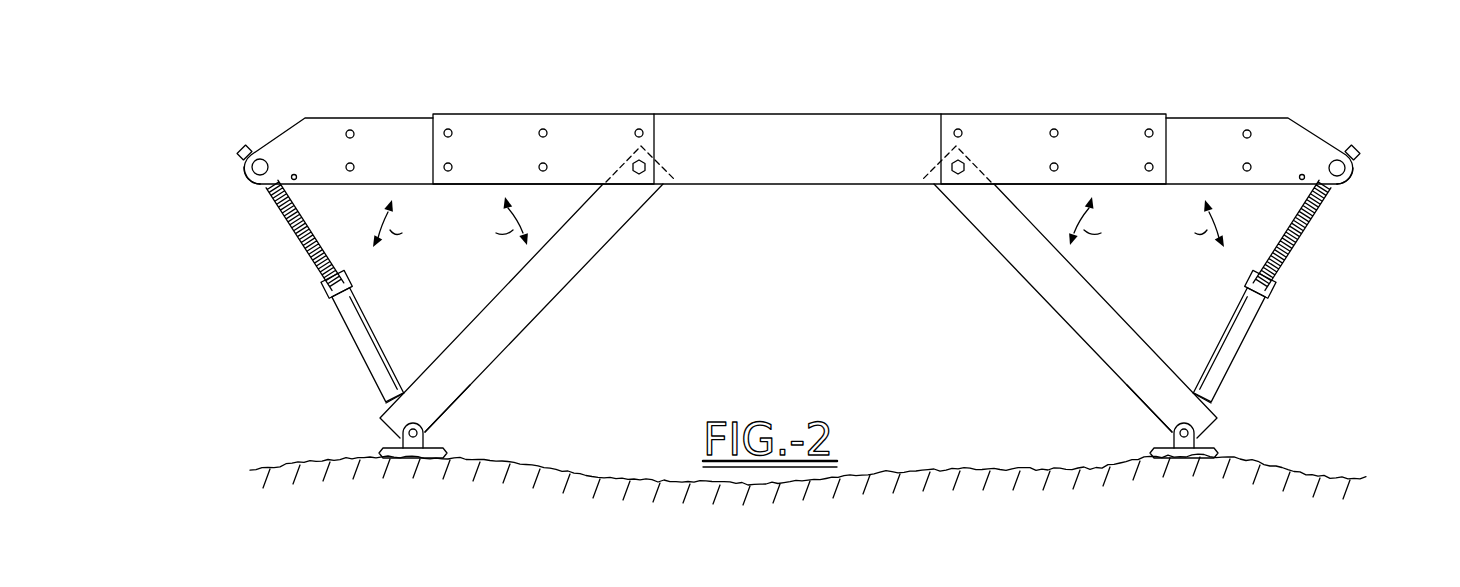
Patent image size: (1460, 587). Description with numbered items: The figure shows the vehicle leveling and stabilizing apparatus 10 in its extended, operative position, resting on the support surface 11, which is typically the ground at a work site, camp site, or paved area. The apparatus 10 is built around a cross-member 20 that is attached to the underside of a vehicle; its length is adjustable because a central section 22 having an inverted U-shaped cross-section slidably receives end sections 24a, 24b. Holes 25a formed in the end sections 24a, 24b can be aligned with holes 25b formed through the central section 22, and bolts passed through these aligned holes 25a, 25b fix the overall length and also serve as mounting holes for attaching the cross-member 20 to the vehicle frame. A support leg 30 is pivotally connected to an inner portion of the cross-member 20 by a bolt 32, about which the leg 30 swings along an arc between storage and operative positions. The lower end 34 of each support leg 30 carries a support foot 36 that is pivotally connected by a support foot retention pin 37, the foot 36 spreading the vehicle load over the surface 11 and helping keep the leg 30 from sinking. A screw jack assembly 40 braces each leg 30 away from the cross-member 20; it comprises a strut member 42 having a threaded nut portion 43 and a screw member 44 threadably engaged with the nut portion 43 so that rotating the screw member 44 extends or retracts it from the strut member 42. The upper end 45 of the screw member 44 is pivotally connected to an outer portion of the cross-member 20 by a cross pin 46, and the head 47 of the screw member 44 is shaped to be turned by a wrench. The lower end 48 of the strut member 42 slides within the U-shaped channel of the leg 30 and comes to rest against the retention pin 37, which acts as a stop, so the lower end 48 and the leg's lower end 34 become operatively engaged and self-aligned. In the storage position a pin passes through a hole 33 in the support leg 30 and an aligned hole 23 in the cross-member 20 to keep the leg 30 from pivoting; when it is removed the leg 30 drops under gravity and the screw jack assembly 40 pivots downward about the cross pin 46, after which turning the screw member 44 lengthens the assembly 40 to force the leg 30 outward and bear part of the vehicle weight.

The vehicle leveling and stabilizing apparatus 10 is at (798, 252).
The support surface 11 is at (547, 466).
The cross-member 20 is at (806, 124).
The central section 22 is at (861, 122).
The hole in cross-member 23 is at (296, 180).
The end section 24a is at (305, 118).
The end section 24b is at (1300, 120).
The holes in end sections 25a is at (350, 130).
The holes in central section 25b is at (543, 129).
The support leg 30 is at (796, 325).
The bolt 32 is at (640, 172).
The hole in support leg 33 is at (394, 427).
The lower end of support leg 34 is at (436, 421).
The support foot 36 is at (428, 455).
The support foot retention pin 37 is at (412, 440).
The screw jack assembly 40 is at (798, 264).
The strut member 42 is at (368, 353).
The threaded nut portion 43 is at (350, 286).
The screw member 44 is at (302, 242).
The upper end of screw member 45 is at (247, 183).
The cross pin 46 is at (252, 167).
The head of screw member 47 is at (240, 142).
The lower end of strut member 48 is at (383, 400).